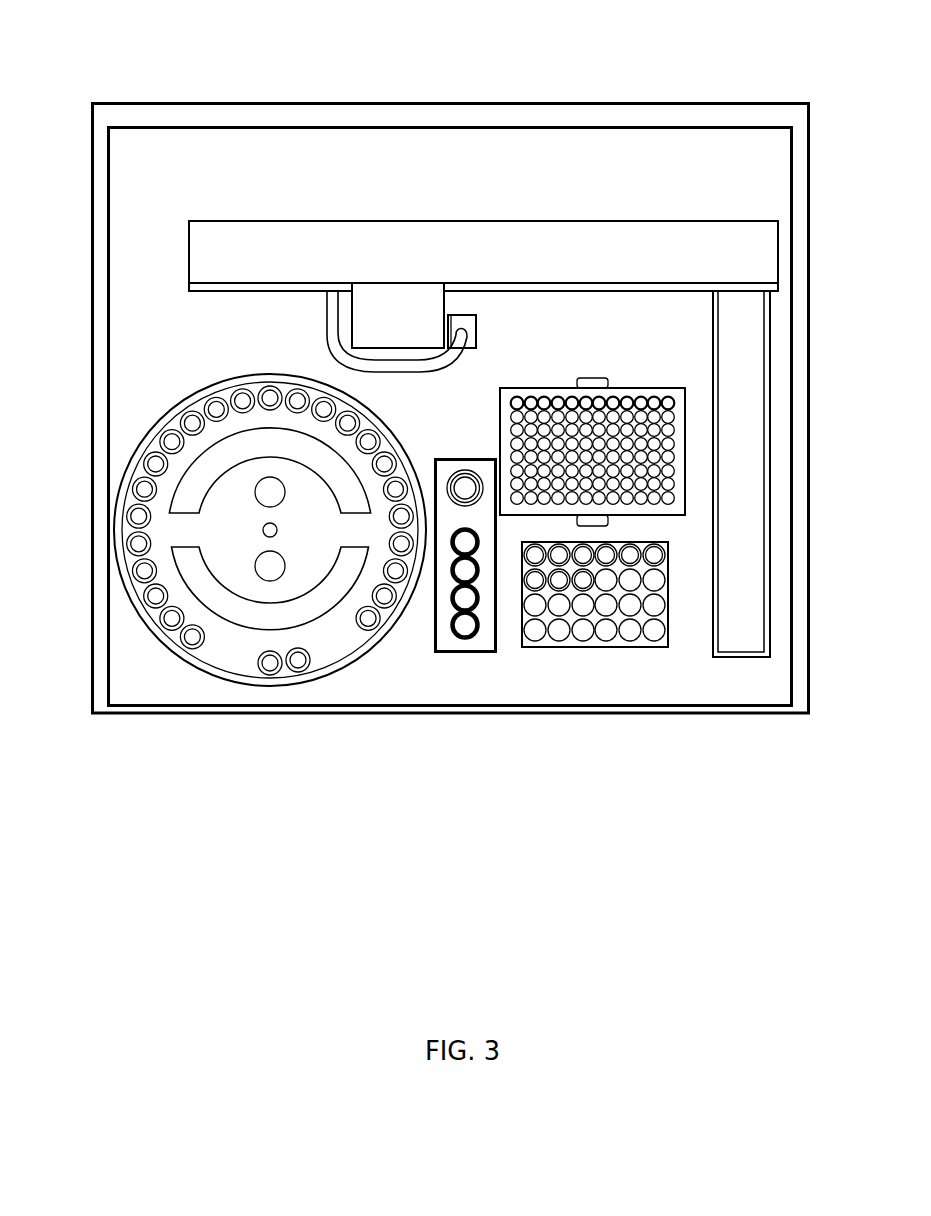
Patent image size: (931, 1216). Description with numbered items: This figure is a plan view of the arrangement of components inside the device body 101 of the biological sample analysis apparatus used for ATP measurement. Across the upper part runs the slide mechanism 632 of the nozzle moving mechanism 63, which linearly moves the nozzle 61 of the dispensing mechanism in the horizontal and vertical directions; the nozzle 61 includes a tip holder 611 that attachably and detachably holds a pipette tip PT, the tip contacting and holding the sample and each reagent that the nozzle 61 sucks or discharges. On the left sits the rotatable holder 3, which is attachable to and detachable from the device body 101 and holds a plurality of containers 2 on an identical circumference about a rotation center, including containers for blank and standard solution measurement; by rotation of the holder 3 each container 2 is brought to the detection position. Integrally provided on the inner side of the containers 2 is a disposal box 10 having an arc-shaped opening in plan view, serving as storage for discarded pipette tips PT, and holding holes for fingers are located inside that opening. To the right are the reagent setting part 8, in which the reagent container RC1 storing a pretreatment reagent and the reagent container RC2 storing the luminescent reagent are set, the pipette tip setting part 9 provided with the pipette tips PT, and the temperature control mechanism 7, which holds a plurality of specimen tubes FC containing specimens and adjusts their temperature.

The device body 101 is at (438, 100).
The slide mechanism 632 is at (411, 220).
The nozzle moving mechanism 63 is at (246, 314).
The nozzle 61 is at (531, 328).
The tip holder 611 is at (478, 327).
The holder 3 is at (250, 575).
The container 2 is at (412, 485).
The disposal box 10 is at (190, 490).
The reagent setting part 8 is at (468, 617).
The reagent container RC1 is at (483, 627).
The reagent container RC2 is at (459, 504).
The pipette tip setting part 9 is at (680, 431).
The pipette tip PT is at (652, 398).
The temperature control mechanism 7 is at (694, 657).
The specimen tube FC is at (670, 553).